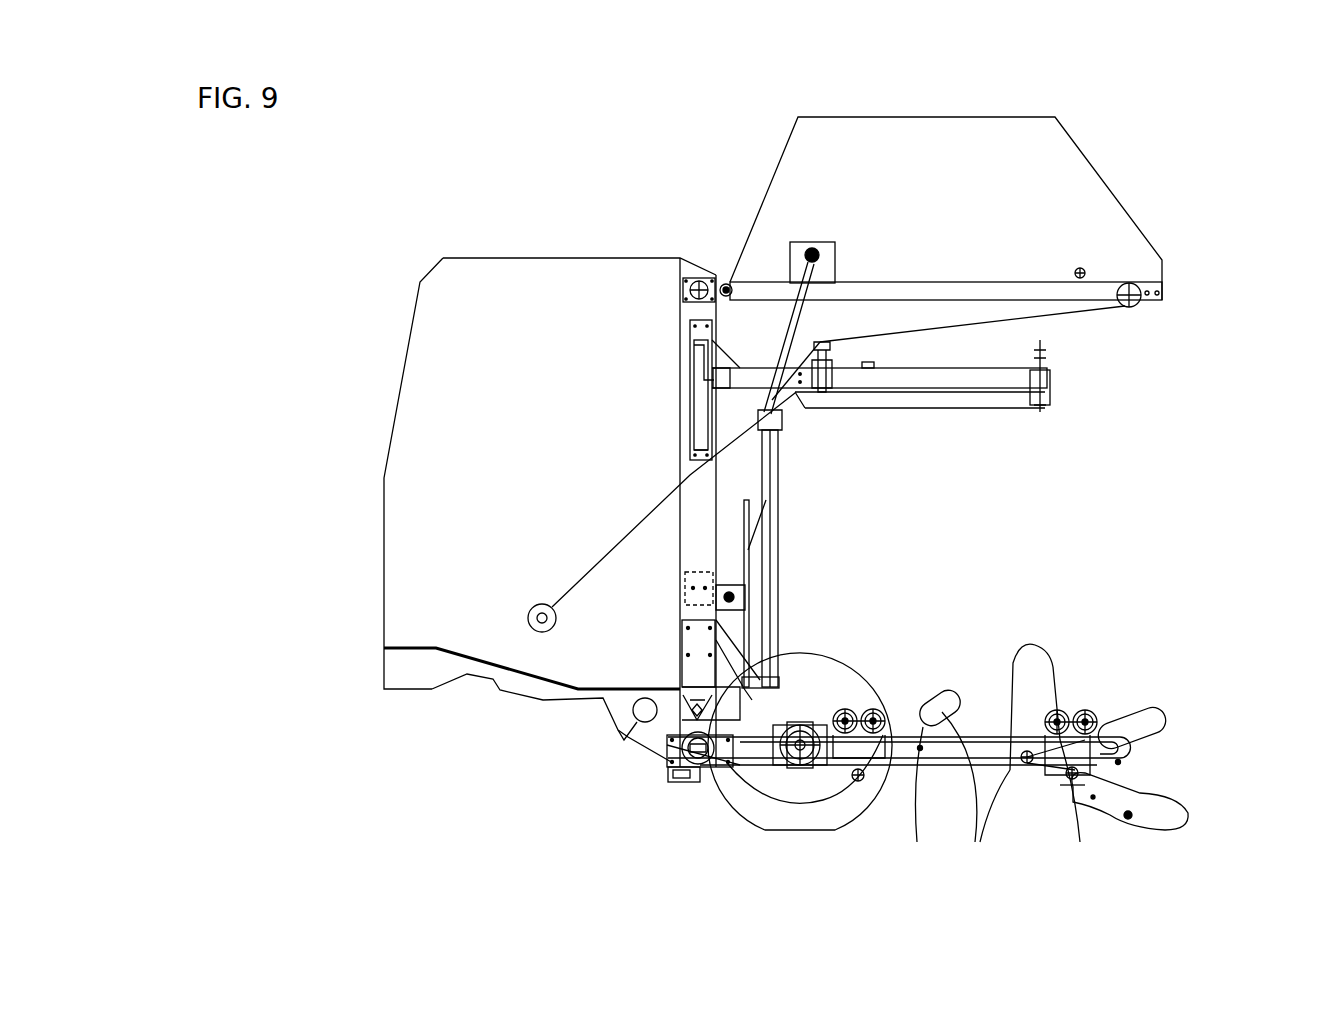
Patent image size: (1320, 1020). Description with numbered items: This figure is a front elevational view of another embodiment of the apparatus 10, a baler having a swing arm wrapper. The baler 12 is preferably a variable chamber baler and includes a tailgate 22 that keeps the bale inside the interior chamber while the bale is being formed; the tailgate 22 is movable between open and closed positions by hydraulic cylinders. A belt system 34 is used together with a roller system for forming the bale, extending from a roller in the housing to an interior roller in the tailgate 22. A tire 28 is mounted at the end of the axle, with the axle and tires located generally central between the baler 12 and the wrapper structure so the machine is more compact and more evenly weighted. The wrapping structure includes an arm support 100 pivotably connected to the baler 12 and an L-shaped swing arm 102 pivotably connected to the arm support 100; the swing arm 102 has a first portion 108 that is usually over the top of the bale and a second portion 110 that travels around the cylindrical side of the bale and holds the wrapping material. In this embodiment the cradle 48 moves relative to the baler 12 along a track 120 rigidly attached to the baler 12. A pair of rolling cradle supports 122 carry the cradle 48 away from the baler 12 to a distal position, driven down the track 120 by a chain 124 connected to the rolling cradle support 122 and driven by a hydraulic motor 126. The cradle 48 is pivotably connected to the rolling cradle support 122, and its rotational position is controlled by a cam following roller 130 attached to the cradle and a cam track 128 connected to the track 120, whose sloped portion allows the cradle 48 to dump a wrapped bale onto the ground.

The apparatus 10 is at (372, 240).
The baler 12 is at (590, 238).
The tailgate 22 is at (958, 100).
The tire 28 is at (730, 800).
The belt system 34 is at (1097, 316).
The cradle 48 is at (934, 688).
The arm support 100 is at (968, 374).
The swing arm 102 is at (845, 400).
The first portion 108 is at (978, 400).
The second portion 110 is at (778, 460).
The track 120 is at (923, 768).
The rolling cradle support 122 is at (857, 710).
The chain 124 is at (1127, 747).
The hydraulic motor 126 is at (700, 747).
The cam track 128 is at (1063, 787).
The cam following roller 130 is at (823, 735).